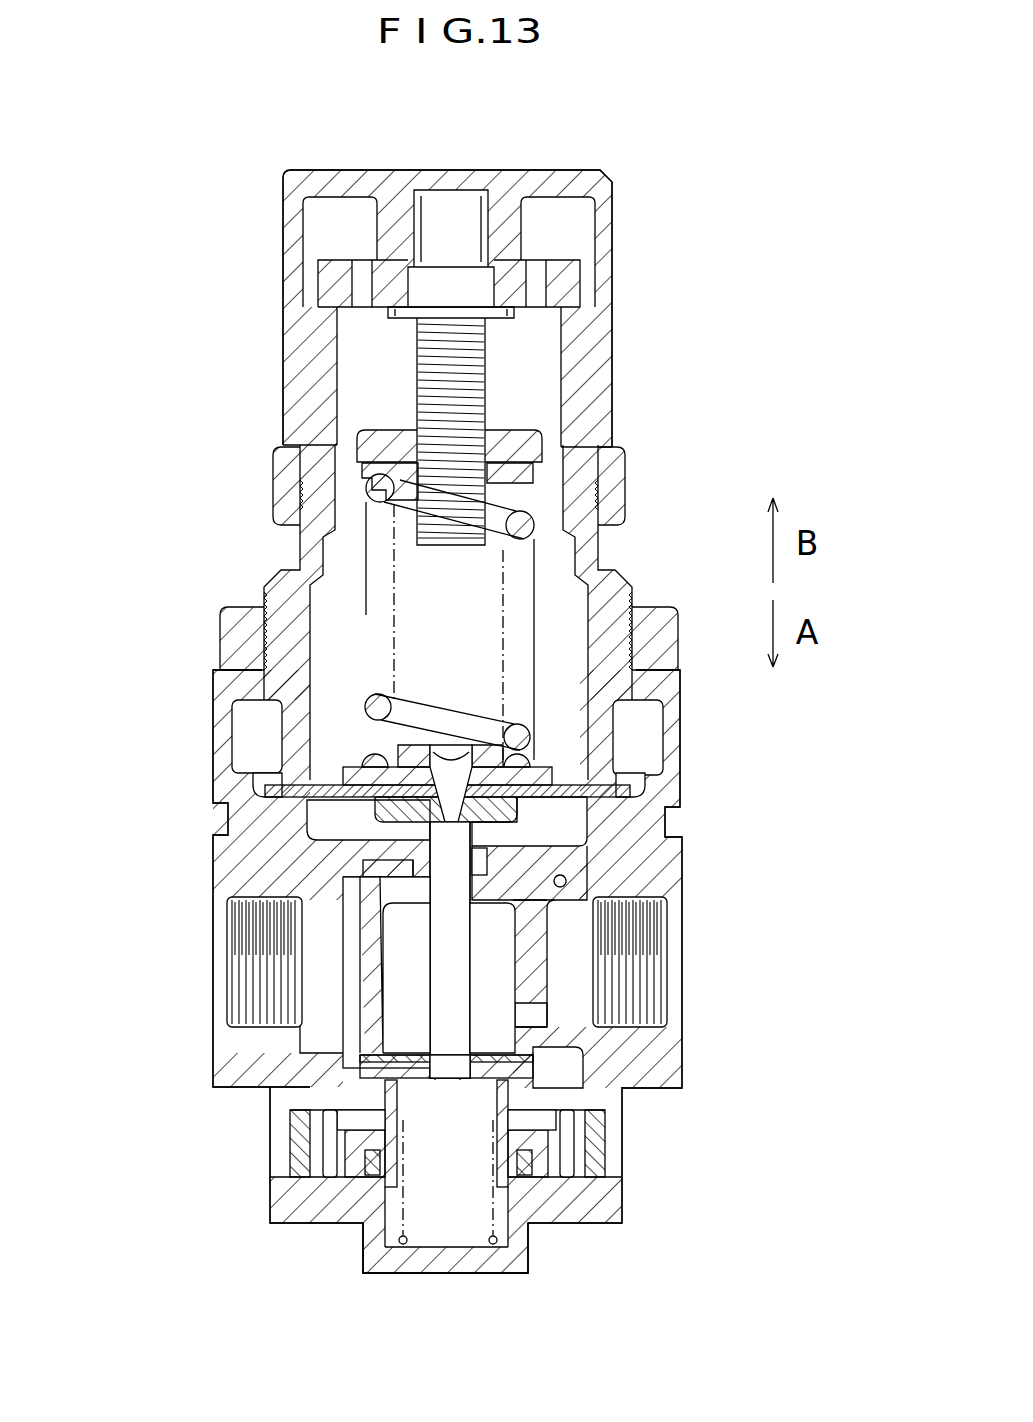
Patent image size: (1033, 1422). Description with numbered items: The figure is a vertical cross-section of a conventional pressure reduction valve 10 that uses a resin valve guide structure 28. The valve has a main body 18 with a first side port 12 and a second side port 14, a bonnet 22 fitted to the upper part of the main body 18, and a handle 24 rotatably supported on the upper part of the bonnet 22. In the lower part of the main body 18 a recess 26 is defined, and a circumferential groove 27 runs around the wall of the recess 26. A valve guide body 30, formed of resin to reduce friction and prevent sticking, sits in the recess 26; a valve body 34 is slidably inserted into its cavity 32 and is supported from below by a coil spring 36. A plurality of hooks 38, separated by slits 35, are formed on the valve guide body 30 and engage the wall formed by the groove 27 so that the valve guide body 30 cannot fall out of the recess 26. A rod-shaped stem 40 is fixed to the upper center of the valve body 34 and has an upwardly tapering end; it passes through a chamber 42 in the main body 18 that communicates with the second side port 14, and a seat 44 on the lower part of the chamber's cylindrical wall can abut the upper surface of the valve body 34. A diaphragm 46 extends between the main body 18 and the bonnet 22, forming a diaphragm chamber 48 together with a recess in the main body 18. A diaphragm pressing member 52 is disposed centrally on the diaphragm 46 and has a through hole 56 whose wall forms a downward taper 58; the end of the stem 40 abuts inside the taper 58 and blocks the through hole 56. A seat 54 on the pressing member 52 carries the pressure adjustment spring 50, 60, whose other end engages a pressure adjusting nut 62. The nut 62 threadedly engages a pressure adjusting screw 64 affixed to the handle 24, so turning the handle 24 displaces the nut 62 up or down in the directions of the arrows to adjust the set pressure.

The pressure reduction valve 10 is at (661, 174).
The first side port 12 is at (257, 1027).
The second side port 14 is at (643, 1008).
The main body 18 is at (700, 844).
The bonnet 22 is at (642, 573).
The handle 24 is at (467, 153).
The recess 26 is at (592, 1115).
The circumferential groove 27 is at (300, 1115).
The valve guide structure 28 is at (640, 1205).
The valve guide body 30 is at (575, 1218).
The cavity 32 is at (450, 1240).
The valve body 34 is at (305, 1125).
The slits 35 is at (327, 1185).
The coil spring 36 is at (403, 1245).
The hooks 38 is at (372, 1155).
The stem 40 is at (448, 935).
The chamber 42 is at (493, 963).
The seat 44 is at (400, 1055).
The diaphragm 46 is at (572, 778).
The diaphragm chamber 48 is at (565, 825).
The pressure adjustment spring 50 is at (560, 885).
The diaphragm pressing member 52 is at (438, 812).
The seat 54 is at (350, 757).
The through hole 56 is at (430, 850).
The taper 58 is at (420, 868).
The pressure adjustment spring 60 is at (378, 700).
The pressure adjusting nut 62 is at (385, 440).
The pressure adjusting screw 64 is at (488, 352).